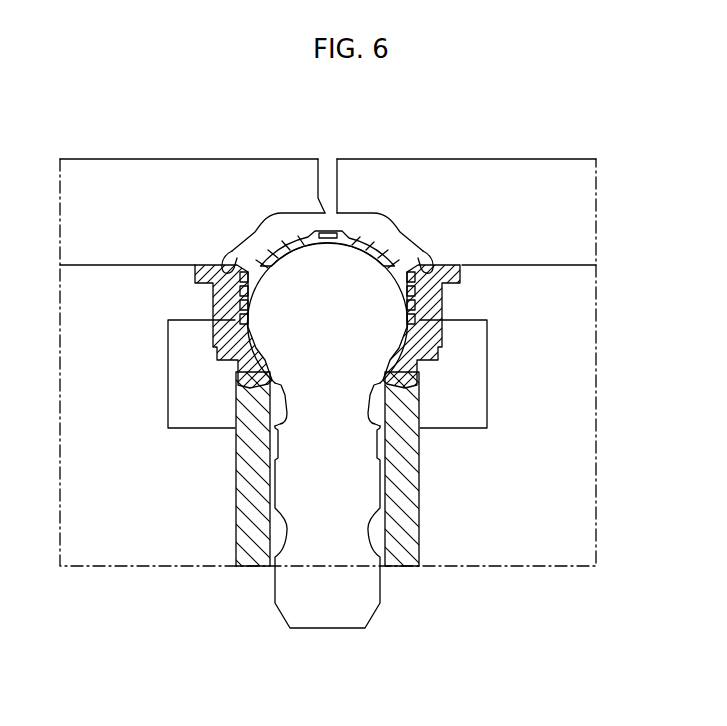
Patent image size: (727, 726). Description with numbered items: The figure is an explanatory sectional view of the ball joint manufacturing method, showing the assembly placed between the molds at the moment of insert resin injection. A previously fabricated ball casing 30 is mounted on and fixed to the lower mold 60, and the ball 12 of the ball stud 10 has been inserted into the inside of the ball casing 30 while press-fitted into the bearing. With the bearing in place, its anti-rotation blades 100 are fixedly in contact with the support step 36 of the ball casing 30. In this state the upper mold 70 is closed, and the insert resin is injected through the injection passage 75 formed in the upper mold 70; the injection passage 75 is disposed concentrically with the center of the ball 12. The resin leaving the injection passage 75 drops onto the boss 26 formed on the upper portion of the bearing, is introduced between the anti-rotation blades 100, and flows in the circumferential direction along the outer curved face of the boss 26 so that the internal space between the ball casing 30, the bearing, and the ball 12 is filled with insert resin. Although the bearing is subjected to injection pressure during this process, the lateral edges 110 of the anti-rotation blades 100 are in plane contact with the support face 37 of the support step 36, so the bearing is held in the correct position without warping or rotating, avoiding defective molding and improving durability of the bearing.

The ball stud 10 is at (274, 486).
The ball 12 is at (290, 327).
The boss 26 is at (333, 228).
The ball casing 30 is at (463, 267).
The support step 36 is at (432, 250).
The support face 37 is at (400, 256).
The lower mold 60 is at (568, 337).
The upper mold 70 is at (570, 180).
The injection passage 75 is at (327, 168).
The anti-rotation blades 100 is at (392, 250).
The lateral edges 110 is at (400, 255).